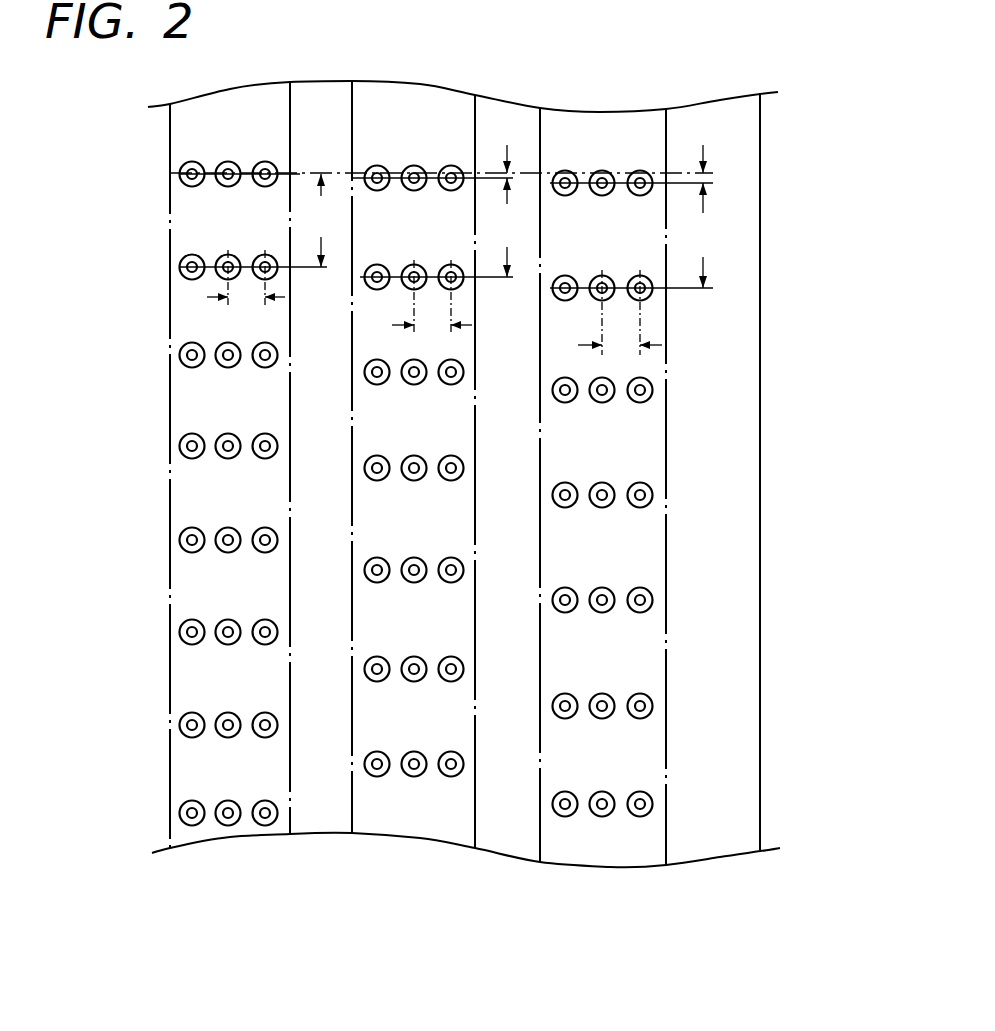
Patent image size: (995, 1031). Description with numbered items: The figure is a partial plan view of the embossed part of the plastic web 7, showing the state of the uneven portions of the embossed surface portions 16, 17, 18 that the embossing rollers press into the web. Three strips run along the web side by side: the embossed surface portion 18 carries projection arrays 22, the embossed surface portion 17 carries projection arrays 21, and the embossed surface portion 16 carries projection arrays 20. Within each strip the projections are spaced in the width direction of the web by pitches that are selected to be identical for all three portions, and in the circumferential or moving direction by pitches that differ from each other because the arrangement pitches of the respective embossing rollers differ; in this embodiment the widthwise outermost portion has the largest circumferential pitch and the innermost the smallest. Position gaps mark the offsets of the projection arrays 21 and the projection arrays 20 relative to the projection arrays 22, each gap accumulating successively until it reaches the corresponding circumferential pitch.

The plastic web 7 is at (742, 395).
The embossed surface portion 16 is at (653, 548).
The embossed surface portion 17 is at (395, 825).
The embossed surface portion 18 is at (193, 593).
The projection arrays 20 is at (563, 300).
The projection arrays 21 is at (373, 288).
The projection arrays 22 is at (190, 278).